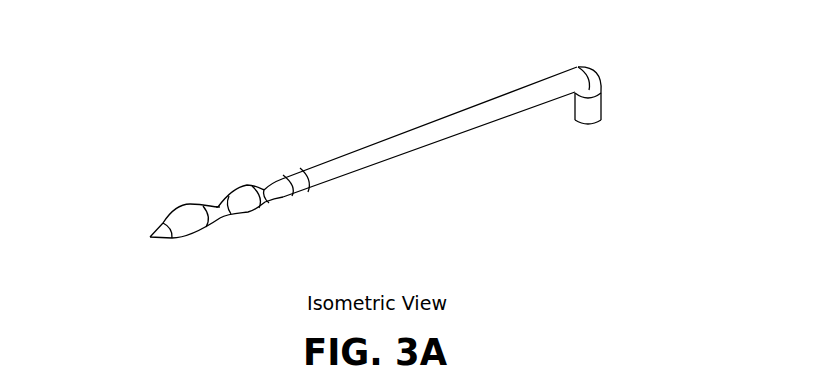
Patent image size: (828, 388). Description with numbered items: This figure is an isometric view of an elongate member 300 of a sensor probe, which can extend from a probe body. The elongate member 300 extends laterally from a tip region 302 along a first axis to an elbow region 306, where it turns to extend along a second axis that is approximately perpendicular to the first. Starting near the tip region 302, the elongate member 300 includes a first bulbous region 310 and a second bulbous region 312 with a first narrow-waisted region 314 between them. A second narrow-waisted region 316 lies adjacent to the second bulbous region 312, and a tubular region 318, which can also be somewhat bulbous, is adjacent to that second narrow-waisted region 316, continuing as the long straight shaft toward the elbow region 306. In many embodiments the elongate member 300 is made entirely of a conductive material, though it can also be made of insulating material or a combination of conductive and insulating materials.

The elongate member 300 is at (393, 275).
The tip region 302 is at (126, 219).
The elbow region 306 is at (585, 58).
The first bulbous region 310 is at (166, 210).
The second bulbous region 312 is at (251, 164).
The first narrow-waisted region 314 is at (186, 170).
The second narrow-waisted region 316 is at (291, 170).
The tubular region 318 is at (326, 193).